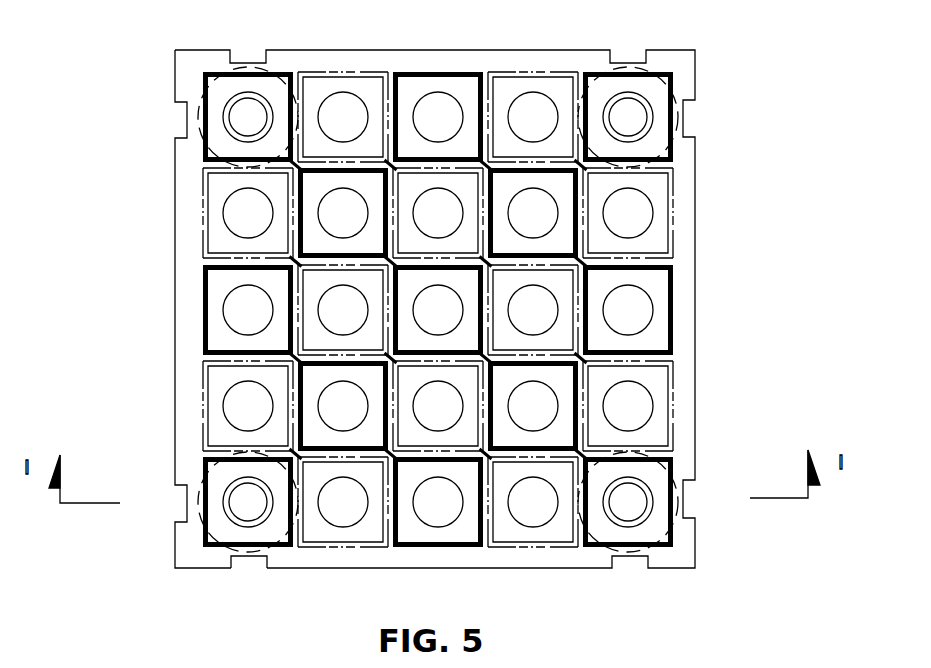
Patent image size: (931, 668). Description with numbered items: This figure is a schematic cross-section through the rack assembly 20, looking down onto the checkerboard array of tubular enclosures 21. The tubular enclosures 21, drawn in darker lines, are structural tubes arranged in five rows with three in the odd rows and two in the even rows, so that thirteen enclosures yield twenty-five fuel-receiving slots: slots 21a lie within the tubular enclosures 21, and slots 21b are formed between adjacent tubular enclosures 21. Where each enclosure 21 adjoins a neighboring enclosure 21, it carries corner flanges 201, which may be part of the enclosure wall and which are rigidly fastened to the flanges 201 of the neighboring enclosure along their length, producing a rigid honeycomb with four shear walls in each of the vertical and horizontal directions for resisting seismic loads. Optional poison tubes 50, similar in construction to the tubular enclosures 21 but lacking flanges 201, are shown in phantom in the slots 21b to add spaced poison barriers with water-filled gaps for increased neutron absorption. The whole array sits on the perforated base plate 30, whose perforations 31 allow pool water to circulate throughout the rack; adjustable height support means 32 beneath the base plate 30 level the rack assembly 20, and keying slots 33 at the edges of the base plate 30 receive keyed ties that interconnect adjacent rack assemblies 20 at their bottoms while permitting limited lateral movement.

The rack assembly 20 is at (442, 301).
The tubular enclosure 21 is at (203, 299).
The slot within tubular enclosure 21a is at (438, 310).
The slot between adjacent tubular enclosures 21b is at (438, 309).
The perforated base plate 30 is at (175, 165).
The perforation 31 is at (225, 307).
The adjustable height support means 32 is at (202, 478).
The keying slot 33 is at (249, 558).
The poison tube 50 is at (368, 72).
The corner flange 201 is at (300, 167).